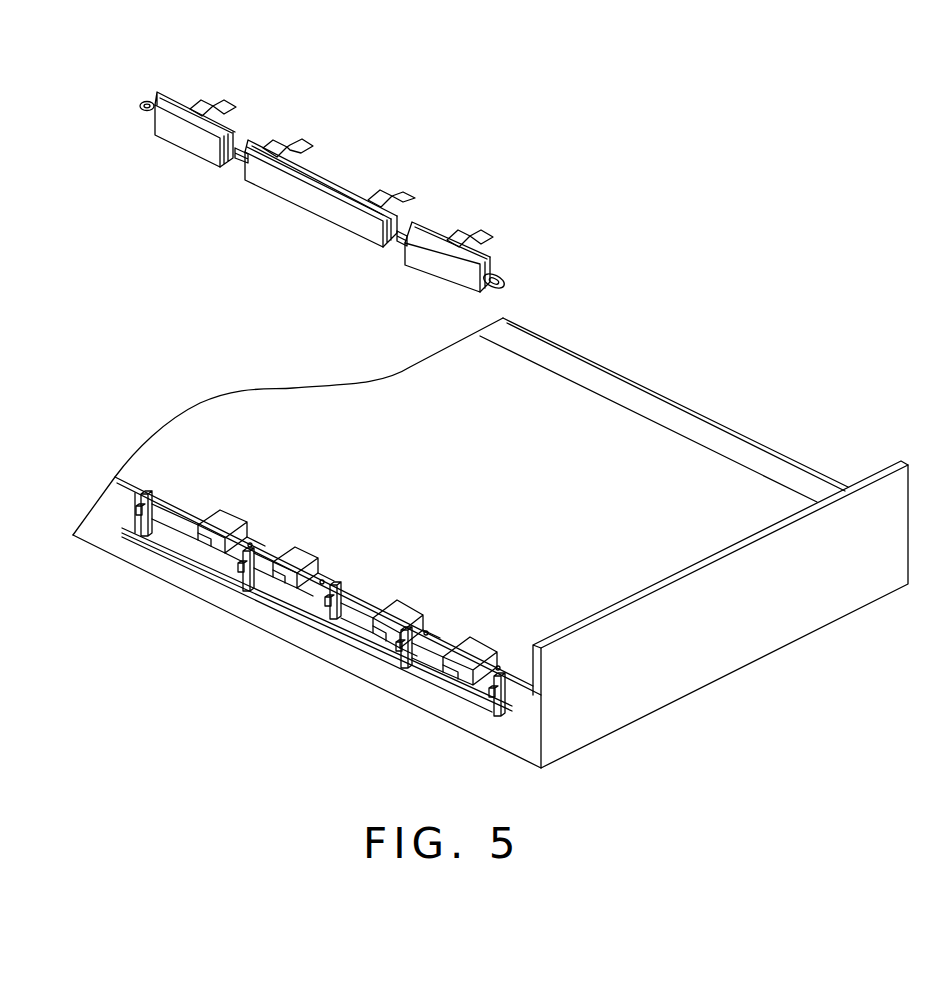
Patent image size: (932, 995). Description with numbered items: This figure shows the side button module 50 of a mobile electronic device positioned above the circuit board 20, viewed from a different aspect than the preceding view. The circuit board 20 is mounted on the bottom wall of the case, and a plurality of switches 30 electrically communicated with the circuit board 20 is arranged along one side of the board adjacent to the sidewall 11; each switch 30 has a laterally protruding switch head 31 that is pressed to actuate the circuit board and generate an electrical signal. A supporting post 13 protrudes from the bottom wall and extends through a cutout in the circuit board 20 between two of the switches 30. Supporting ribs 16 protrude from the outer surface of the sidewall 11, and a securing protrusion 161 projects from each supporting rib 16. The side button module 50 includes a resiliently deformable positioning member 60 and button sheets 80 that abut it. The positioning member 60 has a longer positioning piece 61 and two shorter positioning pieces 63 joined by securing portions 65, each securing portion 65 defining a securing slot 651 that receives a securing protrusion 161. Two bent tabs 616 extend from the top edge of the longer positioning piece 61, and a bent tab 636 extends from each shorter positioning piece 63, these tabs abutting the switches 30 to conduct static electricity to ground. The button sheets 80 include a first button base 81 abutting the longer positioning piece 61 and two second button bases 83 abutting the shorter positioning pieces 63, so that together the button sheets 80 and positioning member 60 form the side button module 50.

The side button module 50 is at (625, 116).
The positioning member 60 is at (297, 26).
The button sheets 80 is at (133, 232).
The second button base 83 is at (175, 135).
The first button base 81 is at (363, 227).
The longer positioning piece 61 is at (350, 193).
The bent tabs 616 is at (283, 153).
The bent tab 636 is at (213, 105).
The shorter positioning piece 63 is at (430, 233).
The securing portion 65 is at (507, 283).
The securing slot 651 is at (490, 280).
The circuit board 20 is at (594, 439).
The sidewall 11 is at (113, 518).
The supporting post 13 is at (313, 600).
The supporting ribs 16 is at (240, 577).
The securing protrusion 161 is at (242, 565).
The switches 30 is at (477, 650).
The switch head 31 is at (447, 665).